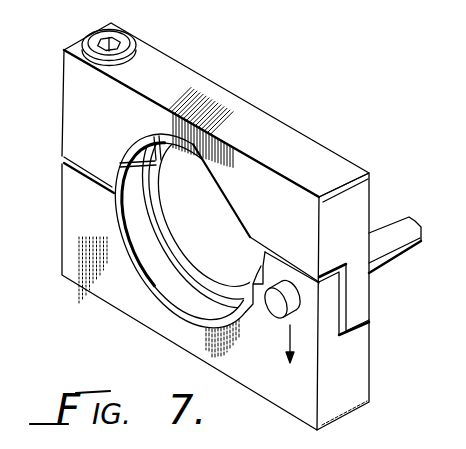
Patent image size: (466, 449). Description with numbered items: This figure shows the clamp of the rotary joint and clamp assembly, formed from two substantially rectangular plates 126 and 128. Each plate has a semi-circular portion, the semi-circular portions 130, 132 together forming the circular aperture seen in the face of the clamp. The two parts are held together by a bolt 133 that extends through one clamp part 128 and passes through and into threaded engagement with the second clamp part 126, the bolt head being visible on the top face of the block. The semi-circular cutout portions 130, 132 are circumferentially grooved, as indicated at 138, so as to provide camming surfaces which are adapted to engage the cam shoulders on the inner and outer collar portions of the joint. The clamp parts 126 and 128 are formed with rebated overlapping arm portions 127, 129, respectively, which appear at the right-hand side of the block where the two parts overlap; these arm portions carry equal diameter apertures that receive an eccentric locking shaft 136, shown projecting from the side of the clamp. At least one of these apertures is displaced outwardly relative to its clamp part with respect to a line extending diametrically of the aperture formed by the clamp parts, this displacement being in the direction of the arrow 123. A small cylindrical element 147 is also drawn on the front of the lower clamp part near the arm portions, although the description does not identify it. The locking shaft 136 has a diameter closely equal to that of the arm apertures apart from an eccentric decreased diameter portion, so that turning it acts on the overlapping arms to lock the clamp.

The arrow 123 is at (291, 330).
The clamp plate 126 is at (66, 213).
The rebated overlapping arm portion 127 is at (341, 321).
The clamp plate 128 is at (198, 75).
The rebated overlapping arm portion 129 is at (368, 297).
The semi-circular portion 130 is at (148, 288).
The semi-circular portion 132 is at (218, 187).
The bolt 133 is at (128, 43).
The eccentric locking shaft 136 is at (392, 222).
The circumferential groove 138 is at (186, 274).
The pin 147 is at (302, 314).